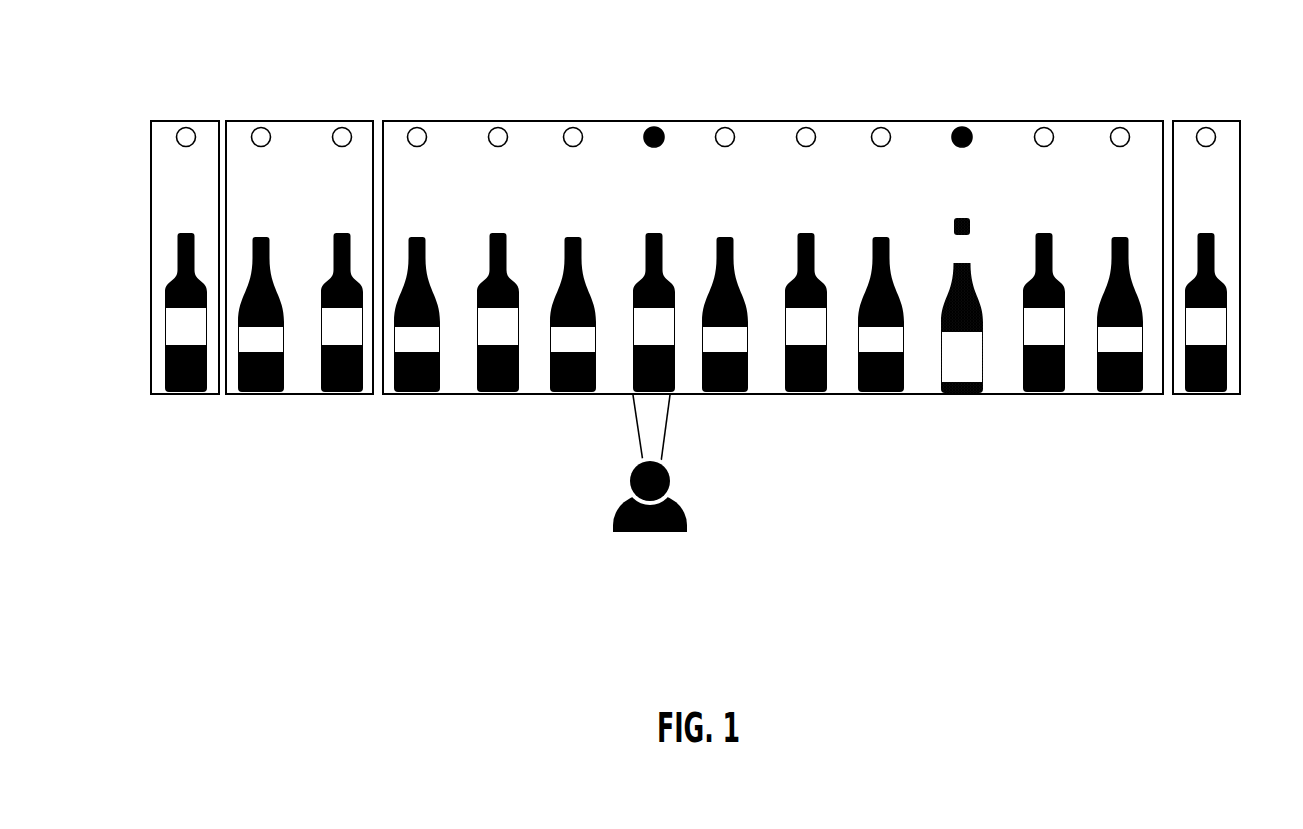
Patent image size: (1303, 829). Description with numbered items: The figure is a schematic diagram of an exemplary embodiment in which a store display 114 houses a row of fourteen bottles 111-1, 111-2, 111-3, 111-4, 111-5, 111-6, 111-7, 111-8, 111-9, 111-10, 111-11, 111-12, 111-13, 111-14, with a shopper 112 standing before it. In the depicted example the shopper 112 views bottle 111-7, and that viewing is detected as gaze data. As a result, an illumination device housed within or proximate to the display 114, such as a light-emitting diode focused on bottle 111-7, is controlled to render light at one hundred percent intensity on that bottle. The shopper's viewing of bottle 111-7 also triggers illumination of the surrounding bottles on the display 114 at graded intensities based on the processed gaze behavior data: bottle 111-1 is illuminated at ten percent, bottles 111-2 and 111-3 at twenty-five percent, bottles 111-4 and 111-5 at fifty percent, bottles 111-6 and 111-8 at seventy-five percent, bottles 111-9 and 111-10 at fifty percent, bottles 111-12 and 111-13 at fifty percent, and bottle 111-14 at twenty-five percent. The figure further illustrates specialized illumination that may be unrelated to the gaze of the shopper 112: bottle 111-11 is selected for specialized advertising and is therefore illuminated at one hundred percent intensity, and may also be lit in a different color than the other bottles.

The store display 114 is at (535, 121).
The bottle 111-1 is at (199, 345).
The bottle 111-2 is at (273, 365).
The bottle 111-3 is at (354, 345).
The bottle 111-4 is at (430, 365).
The bottle 111-5 is at (511, 345).
The bottle 111-6 is at (573, 395).
The bottle 111-7 is at (672, 395).
The bottle 111-8 is at (738, 347).
The bottle 111-9 is at (819, 345).
The bottle 111-10 is at (898, 365).
The bottle 111-11 is at (980, 338).
The bottle 111-12 is at (1062, 363).
The bottle 111-13 is at (1137, 347).
The bottle 111-14 is at (1224, 363).
The shopper 112 is at (648, 565).